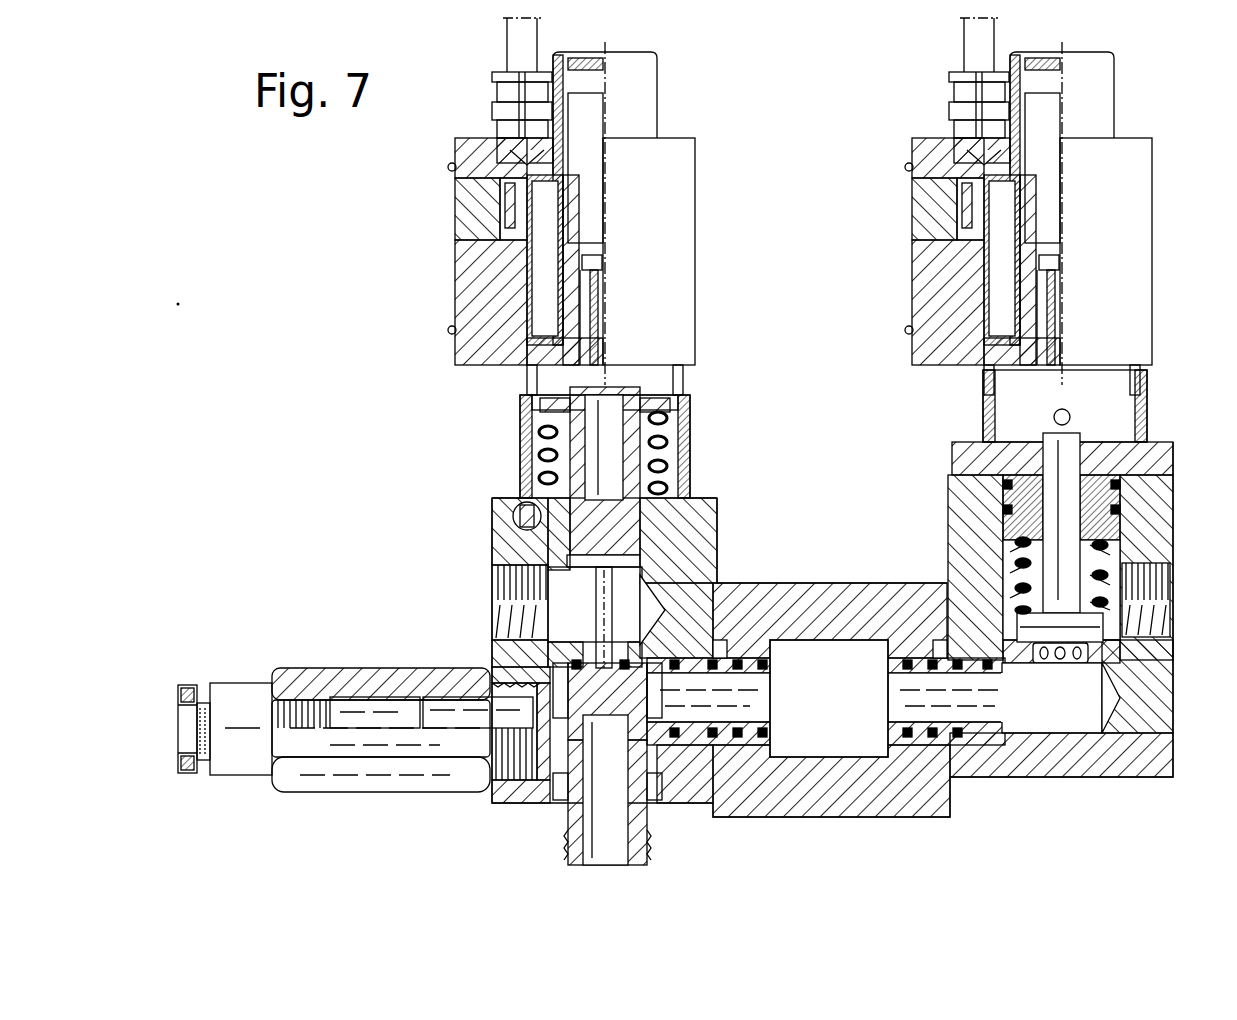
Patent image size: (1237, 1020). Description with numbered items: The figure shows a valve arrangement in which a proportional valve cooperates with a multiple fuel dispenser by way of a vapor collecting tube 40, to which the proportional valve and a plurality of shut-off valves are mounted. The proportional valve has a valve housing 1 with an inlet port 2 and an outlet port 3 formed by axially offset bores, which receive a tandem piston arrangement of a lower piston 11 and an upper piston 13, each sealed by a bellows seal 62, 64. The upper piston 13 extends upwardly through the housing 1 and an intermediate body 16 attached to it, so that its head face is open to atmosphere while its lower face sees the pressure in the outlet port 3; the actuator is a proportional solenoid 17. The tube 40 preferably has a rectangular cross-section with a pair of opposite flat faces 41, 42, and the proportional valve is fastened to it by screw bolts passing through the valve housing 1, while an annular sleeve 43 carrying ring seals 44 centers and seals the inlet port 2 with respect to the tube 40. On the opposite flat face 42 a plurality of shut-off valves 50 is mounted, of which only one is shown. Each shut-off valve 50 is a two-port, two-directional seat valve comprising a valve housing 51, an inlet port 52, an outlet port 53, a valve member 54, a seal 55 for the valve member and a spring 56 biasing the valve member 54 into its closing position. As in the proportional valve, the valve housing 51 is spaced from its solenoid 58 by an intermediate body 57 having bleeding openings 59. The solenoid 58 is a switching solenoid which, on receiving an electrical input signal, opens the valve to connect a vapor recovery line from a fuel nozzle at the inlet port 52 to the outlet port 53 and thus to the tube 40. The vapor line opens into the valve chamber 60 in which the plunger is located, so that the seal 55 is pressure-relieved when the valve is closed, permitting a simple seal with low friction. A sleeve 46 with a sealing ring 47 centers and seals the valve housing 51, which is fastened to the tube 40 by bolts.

The valve housing 1 is at (500, 512).
The inlet port 2 is at (652, 738).
The outlet port 3 is at (495, 592).
The lower piston 11 is at (575, 440).
The upper piston 13 is at (566, 850).
The intermediate body 16 is at (690, 412).
The proportional solenoid 17 is at (680, 150).
The vapor collecting tube 40 is at (820, 665).
The flat face 41 is at (708, 600).
The flat face 42 is at (960, 610).
The annular sleeve 43 is at (740, 745).
The ring seals 44 is at (725, 745).
The sleeve 46 is at (912, 745).
The sealing ring 47 is at (930, 745).
The shut-off valve 50 is at (924, 130).
The valve housing 51 is at (1025, 758).
The inlet port 52 is at (1150, 620).
The outlet port 53 is at (1080, 722).
The valve member 54 is at (1105, 655).
The seal 55 is at (1150, 466).
The spring 56 is at (1010, 565).
The intermediate body 57 is at (1145, 402).
The solenoid 58 is at (925, 280).
The bleeding openings 59 is at (985, 413).
The valve chamber 60 is at (1110, 582).
The bellows seal 62 is at (560, 820).
The bellows seal 64 is at (660, 470).